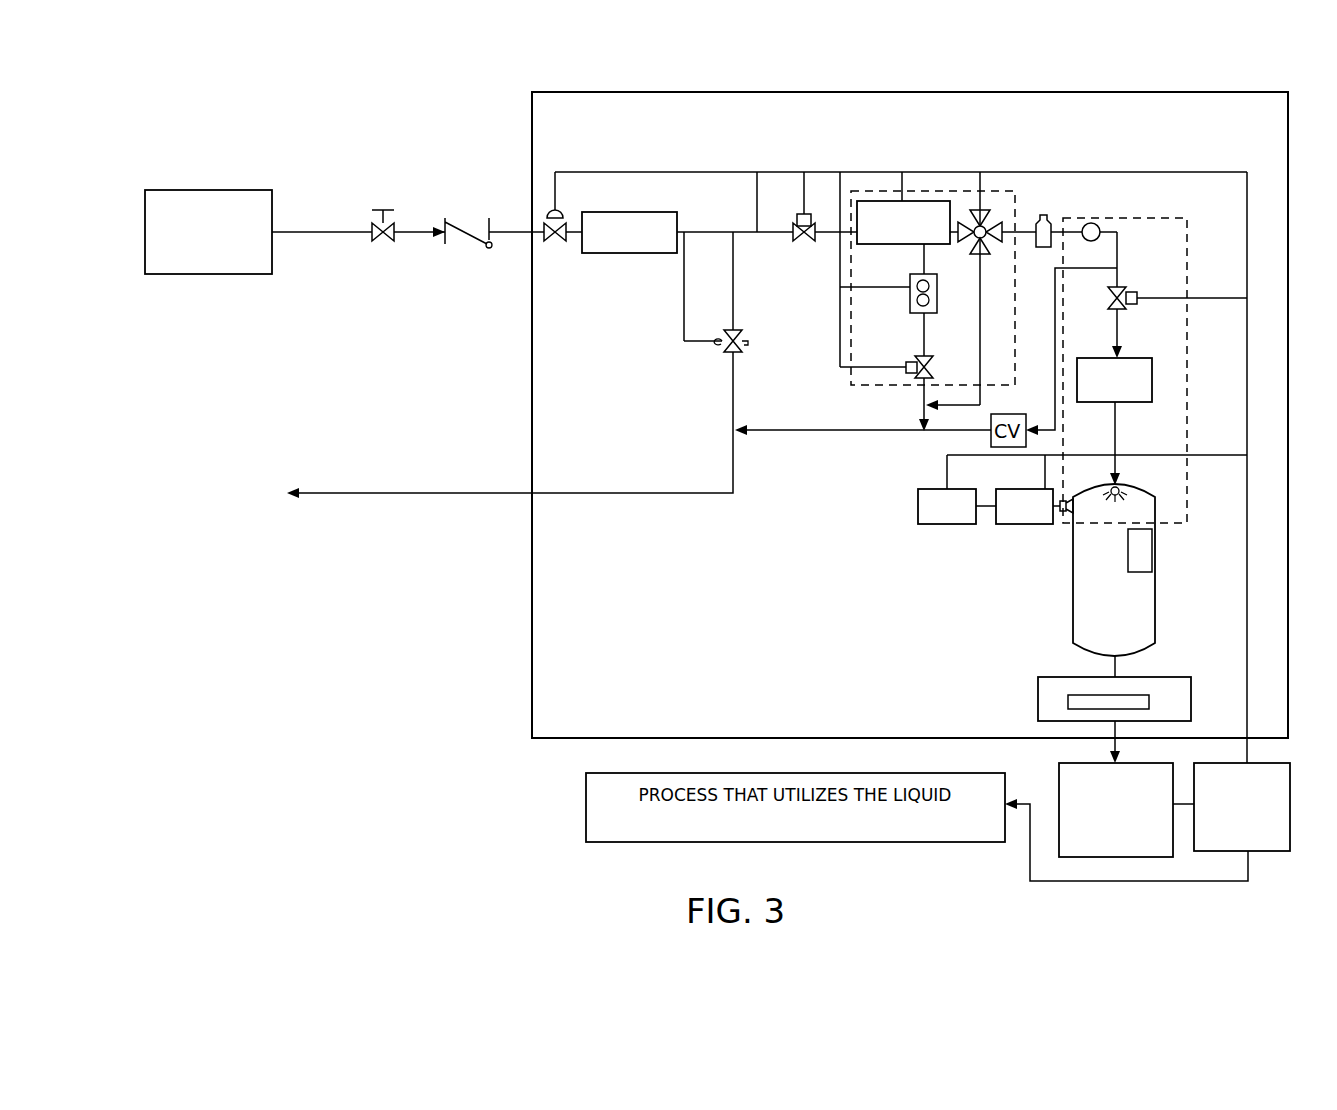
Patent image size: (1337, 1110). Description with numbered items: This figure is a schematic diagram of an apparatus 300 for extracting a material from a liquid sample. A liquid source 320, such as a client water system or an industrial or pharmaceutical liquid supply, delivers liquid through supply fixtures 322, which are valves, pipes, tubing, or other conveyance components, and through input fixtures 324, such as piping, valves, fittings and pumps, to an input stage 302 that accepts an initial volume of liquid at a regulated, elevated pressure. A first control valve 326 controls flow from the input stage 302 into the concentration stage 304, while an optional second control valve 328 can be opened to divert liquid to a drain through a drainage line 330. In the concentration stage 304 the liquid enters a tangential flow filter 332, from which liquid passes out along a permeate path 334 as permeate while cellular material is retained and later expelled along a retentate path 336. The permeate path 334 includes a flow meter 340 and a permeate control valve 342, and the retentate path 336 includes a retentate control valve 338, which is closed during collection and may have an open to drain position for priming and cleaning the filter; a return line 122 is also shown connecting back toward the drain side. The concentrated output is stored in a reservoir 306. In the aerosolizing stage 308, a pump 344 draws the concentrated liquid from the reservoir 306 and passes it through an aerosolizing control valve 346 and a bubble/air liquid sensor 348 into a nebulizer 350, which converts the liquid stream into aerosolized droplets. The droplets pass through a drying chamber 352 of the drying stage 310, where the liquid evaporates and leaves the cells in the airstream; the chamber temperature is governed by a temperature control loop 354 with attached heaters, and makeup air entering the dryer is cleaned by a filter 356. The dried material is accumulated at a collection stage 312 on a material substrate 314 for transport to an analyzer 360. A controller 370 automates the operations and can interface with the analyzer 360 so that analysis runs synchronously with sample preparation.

The apparatus 300 is at (793, 60).
The input stage 302 is at (645, 245).
The concentration stage 304 is at (997, 191).
The reservoir 306 is at (1054, 216).
The aerosolizing stage 308 is at (1186, 241).
The drying stage 310 is at (1155, 605).
The collection stage 312 is at (1036, 683).
The material substrate 314 is at (1068, 707).
The liquid source 320 is at (224, 245).
The supply fixtures 322 is at (418, 181).
The input fixtures 324 is at (568, 276).
The first control valve 326 is at (808, 247).
The second control valve 328 is at (726, 353).
The drainage line 330 is at (696, 497).
The tangential flow filter 332 is at (919, 235).
The permeate path 334 is at (920, 256).
The retentate path 336 is at (957, 226).
The retentate control valve 338 is at (976, 250).
The flow meter 340 is at (908, 298).
The permeate control valve 342 is at (906, 378).
The pump 344 is at (1093, 241).
The aerosolizing control valve 346 is at (1124, 304).
The bubble/air liquid sensor 348 is at (1131, 393).
The nebulizer 350 is at (1123, 486).
The drying chamber 352 is at (1143, 565).
The temperature control loop 354 is at (1041, 519).
The filter 356 is at (963, 519).
The analyzer 360 is at (1132, 823).
The controller 370 is at (1259, 819).
The return line 122 is at (812, 436).